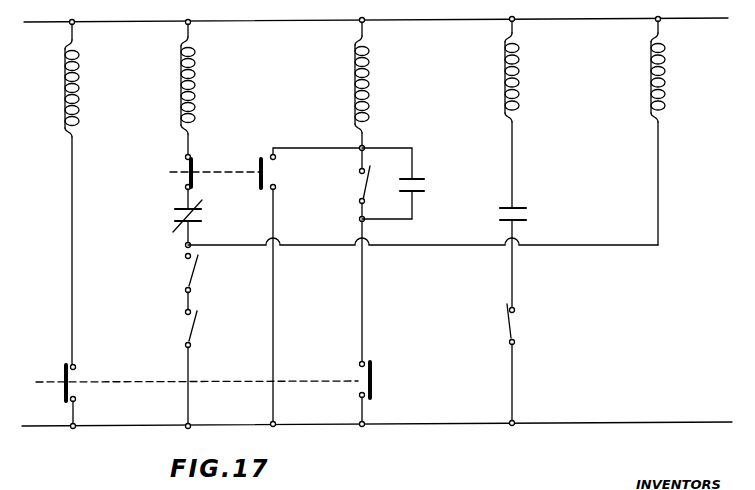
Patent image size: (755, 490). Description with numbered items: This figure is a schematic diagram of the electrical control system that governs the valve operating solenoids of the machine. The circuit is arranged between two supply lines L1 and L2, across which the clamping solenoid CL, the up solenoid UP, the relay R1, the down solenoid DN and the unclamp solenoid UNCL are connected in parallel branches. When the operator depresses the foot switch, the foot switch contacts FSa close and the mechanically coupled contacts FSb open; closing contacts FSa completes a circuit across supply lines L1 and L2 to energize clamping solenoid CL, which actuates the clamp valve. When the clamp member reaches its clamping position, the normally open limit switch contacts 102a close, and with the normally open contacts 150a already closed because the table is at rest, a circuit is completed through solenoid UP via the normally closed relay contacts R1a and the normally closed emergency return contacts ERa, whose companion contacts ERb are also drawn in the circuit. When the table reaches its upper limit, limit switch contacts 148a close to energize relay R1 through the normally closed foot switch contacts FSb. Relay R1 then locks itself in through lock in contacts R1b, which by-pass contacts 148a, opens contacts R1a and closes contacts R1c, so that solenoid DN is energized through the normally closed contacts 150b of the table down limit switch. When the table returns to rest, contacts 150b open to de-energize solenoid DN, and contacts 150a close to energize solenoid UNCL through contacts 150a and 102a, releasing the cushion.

The supply line L1 is at (53, 22).
The supply line L2 is at (63, 427).
The clamping solenoid CL is at (77, 78).
The valve control solenoid UP is at (193, 78).
The relay R1 is at (373, 83).
The valve controlling solenoid DN is at (516, 78).
The valve controlled solenoid UNCL is at (664, 78).
The emergency return contacts ERa is at (185, 168).
The emergency return contacts ERb is at (276, 171).
The relay contacts R1a is at (178, 212).
The lock in contacts R1b is at (425, 190).
The relay contacts R1c is at (527, 212).
The limit switch contacts 148a is at (360, 188).
The limit switch contacts 102a is at (184, 268).
The limit switch contacts 150a is at (184, 325).
The limit switch contacts 150b is at (530, 332).
The foot switch contacts FSa is at (63, 377).
The foot switch contacts FSb is at (373, 381).